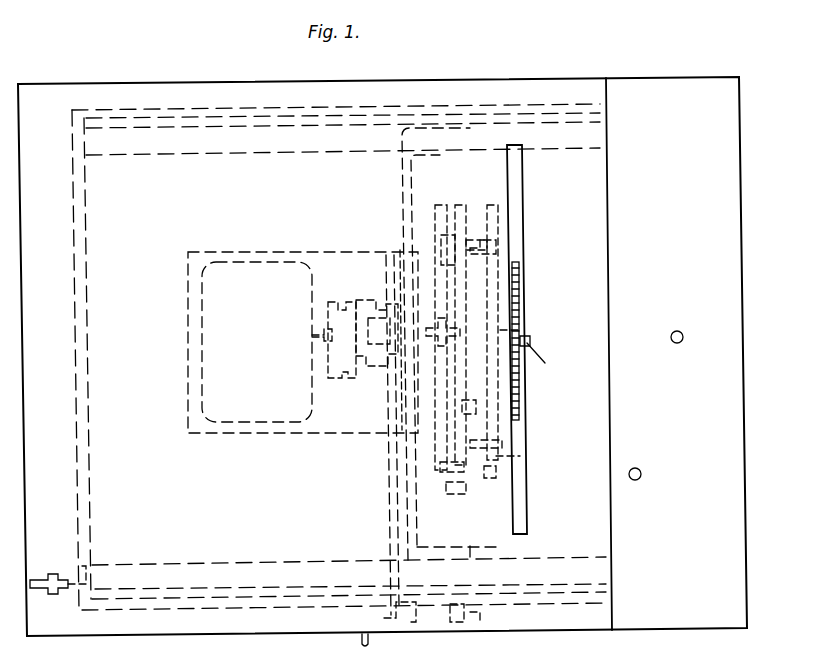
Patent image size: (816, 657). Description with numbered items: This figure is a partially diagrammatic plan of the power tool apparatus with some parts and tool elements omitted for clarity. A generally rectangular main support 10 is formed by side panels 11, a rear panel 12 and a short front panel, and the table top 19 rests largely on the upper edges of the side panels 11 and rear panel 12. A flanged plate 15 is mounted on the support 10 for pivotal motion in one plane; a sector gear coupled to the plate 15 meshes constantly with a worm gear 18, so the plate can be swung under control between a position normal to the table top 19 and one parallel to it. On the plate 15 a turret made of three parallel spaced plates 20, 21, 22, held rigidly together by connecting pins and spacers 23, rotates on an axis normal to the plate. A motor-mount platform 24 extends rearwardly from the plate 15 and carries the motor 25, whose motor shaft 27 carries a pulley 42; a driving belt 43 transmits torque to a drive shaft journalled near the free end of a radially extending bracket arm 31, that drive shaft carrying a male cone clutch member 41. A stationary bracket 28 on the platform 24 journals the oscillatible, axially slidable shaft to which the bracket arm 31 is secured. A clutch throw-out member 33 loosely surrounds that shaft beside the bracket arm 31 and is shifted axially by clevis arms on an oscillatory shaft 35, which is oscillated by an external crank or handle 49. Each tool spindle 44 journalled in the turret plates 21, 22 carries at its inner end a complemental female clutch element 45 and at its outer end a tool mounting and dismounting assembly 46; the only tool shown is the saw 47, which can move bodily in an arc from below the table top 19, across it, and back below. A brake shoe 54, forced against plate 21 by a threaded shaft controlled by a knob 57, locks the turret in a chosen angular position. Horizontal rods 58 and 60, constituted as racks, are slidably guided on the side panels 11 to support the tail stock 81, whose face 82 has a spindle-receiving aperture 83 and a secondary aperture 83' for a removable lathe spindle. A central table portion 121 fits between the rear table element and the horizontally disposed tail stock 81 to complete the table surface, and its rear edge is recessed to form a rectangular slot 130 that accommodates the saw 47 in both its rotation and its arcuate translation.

The main support 10 is at (80, 345).
The side panels 11 is at (254, 106).
The rear panel 12 is at (92, 246).
The flanged plate 15 is at (430, 210).
The worm gear 18 is at (40, 572).
The table top 19 is at (318, 168).
The turret plate 20 is at (444, 472).
The turret plate 21 is at (470, 412).
The turret plate 22 is at (491, 488).
The connecting pins and spacers 23 is at (485, 245).
The motor-mount platform 24 is at (188, 262).
The motor 25 is at (206, 370).
The motor shaft 27 is at (312, 338).
The stationary bracket 28 is at (366, 390).
The bracket arm 31 is at (400, 252).
The clutch throw-out member 33 is at (392, 304).
The oscillatory shaft 35 is at (388, 528).
The clutch member 41 is at (432, 318).
The pulley 42 is at (330, 380).
The driving belt 43 is at (338, 304).
The tool spindle 44 is at (518, 326).
The clutch element 45 is at (455, 235).
The tool mounting and dismounting assembly 46 is at (543, 358).
The saw 47 is at (522, 402).
The external crank or handle 49 is at (362, 640).
The brake shoe 54 is at (530, 448).
The knob 57 is at (456, 618).
The horizontal rod 58 is at (118, 566).
The horizontal rod 60 is at (190, 154).
The tail stock 81 is at (793, 226).
The face 82 is at (714, 113).
The spindle-receiving aperture 83 is at (695, 321).
The secondary aperture 83' is at (658, 463).
The central table portion 121 is at (569, 495).
The rectangular slot 130 is at (522, 468).